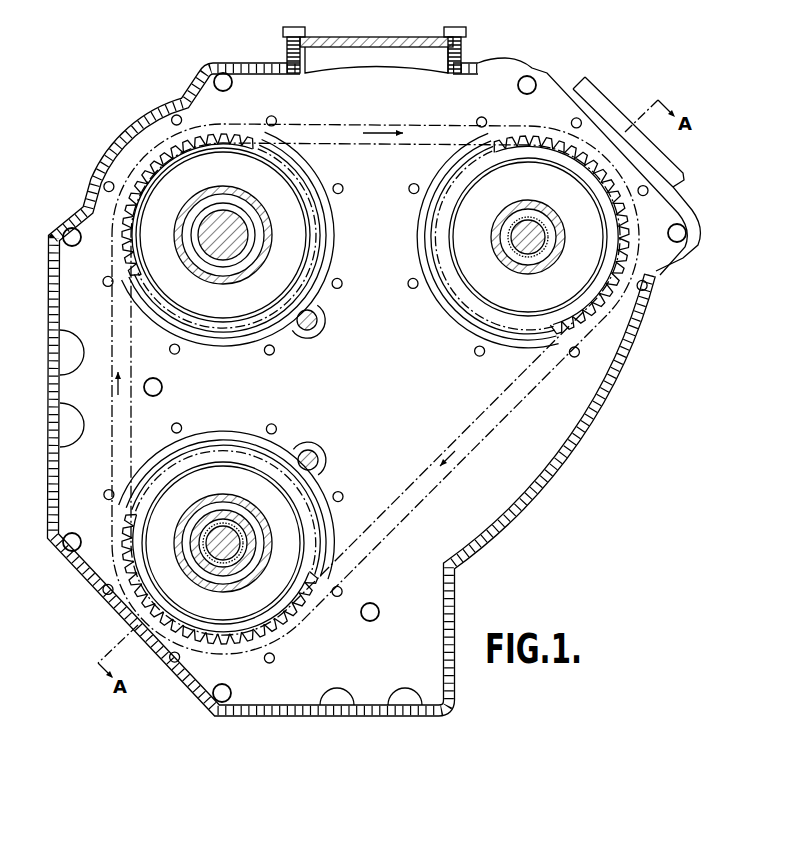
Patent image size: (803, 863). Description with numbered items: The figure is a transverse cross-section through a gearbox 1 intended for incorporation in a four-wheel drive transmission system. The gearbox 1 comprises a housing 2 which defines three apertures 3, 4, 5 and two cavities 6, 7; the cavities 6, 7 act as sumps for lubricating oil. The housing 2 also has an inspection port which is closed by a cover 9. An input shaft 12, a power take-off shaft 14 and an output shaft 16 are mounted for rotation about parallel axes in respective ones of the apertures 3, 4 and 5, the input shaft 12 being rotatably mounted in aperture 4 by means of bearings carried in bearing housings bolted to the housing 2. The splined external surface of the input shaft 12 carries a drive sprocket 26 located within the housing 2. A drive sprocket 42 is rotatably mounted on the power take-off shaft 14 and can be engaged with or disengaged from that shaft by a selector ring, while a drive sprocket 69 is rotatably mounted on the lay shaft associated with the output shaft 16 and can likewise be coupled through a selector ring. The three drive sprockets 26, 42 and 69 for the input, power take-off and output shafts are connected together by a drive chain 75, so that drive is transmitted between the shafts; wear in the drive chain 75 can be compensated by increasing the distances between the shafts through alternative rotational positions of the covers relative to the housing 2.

The gearbox 1 is at (590, 429).
The housing 2 is at (361, 706).
The aperture 3 is at (243, 343).
The aperture 4 is at (472, 321).
The aperture 5 is at (325, 525).
The cavity 6 is at (275, 690).
The cavity 7 is at (88, 400).
The cover 9 is at (466, 42).
The input shaft 12 is at (510, 243).
The power take-off shaft 14 is at (217, 253).
The output shaft 16 is at (232, 548).
The drive sprocket 26 is at (607, 283).
The drive sprocket 42 is at (190, 143).
The drive sprocket 69 is at (140, 590).
The drive chain 75 is at (522, 406).